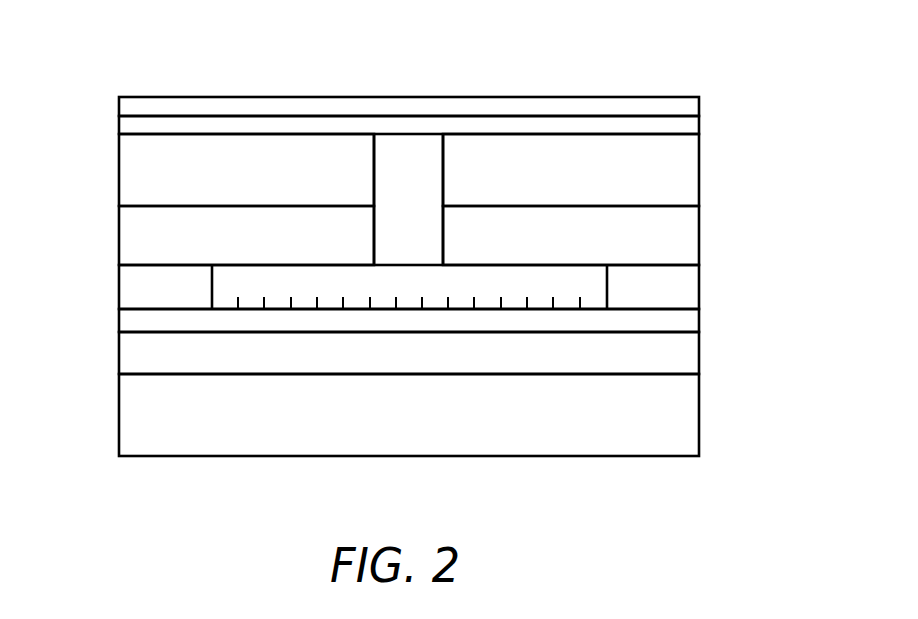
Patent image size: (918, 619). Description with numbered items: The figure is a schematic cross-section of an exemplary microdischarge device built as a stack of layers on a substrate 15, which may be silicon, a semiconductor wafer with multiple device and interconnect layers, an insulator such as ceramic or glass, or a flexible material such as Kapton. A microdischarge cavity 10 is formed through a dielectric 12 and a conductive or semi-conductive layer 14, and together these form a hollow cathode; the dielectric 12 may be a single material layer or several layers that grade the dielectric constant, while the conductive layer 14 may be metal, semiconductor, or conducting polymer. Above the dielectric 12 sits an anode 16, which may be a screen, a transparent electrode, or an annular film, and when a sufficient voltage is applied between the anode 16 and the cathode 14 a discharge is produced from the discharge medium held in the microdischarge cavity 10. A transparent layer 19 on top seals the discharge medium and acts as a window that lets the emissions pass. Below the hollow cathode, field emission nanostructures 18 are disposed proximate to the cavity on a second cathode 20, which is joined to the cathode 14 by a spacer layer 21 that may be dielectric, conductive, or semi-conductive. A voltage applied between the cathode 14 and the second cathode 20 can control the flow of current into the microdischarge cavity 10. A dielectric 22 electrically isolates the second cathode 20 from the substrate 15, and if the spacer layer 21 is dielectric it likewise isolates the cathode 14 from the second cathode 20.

The microdischarge cavity 10 is at (405, 163).
The dielectric 12 is at (140, 170).
The conductive or semi-conductive layer 14 is at (140, 236).
The substrate 15 is at (678, 418).
The anode 16 is at (678, 128).
The field emission nanostructures 18 is at (327, 296).
The transparent layer 19 is at (677, 108).
The second cathode 20 is at (678, 322).
The spacer layer 21 is at (678, 290).
The dielectric 22 is at (678, 358).